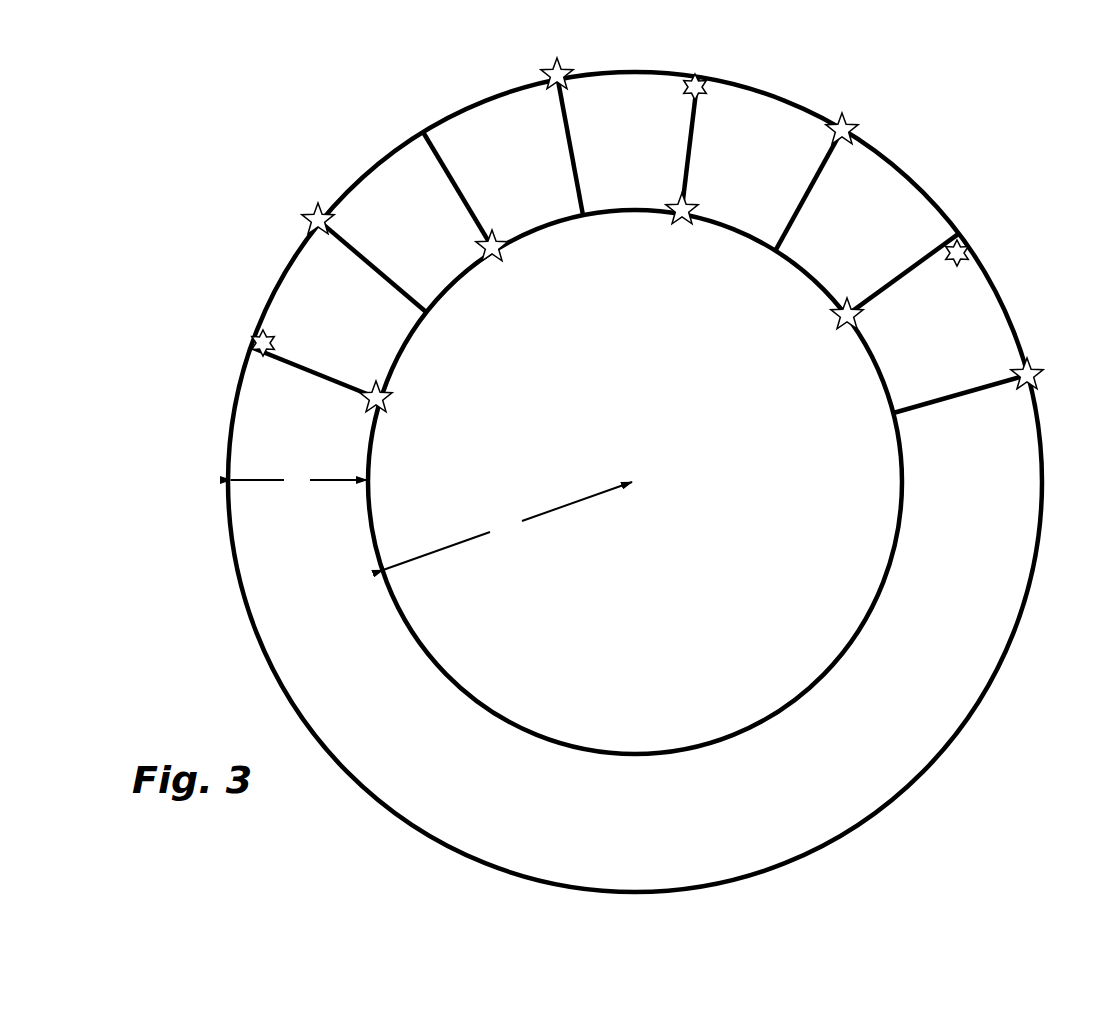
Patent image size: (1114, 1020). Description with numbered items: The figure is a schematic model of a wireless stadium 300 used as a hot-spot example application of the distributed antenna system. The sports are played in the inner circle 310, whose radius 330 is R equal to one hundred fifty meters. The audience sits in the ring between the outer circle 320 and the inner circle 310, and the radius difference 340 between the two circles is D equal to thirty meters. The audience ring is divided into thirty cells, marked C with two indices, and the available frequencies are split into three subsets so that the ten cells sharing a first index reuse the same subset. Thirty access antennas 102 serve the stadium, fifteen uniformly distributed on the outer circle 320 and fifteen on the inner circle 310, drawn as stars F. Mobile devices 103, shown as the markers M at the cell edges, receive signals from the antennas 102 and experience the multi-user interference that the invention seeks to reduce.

The fixed antennas 102 is at (548, 70).
The mobile device 103 is at (690, 73).
The stadium 300 is at (214, 851).
The inner circle 310 is at (822, 669).
The outer circle 320 is at (955, 727).
The radius 330 is at (582, 502).
The radius difference 340 is at (335, 478).